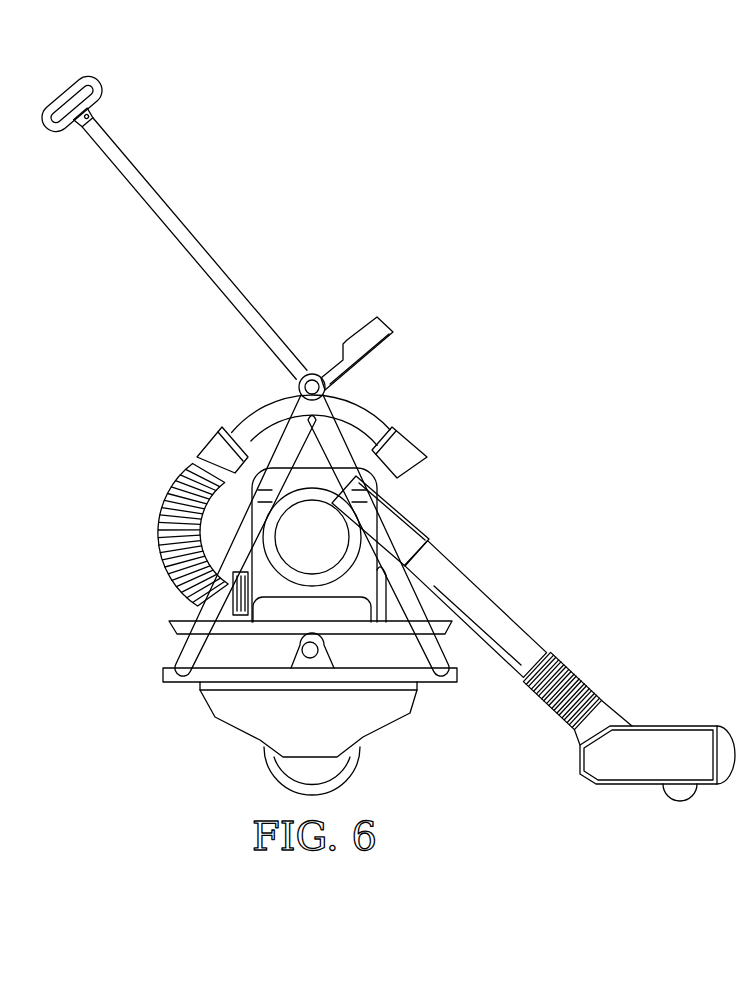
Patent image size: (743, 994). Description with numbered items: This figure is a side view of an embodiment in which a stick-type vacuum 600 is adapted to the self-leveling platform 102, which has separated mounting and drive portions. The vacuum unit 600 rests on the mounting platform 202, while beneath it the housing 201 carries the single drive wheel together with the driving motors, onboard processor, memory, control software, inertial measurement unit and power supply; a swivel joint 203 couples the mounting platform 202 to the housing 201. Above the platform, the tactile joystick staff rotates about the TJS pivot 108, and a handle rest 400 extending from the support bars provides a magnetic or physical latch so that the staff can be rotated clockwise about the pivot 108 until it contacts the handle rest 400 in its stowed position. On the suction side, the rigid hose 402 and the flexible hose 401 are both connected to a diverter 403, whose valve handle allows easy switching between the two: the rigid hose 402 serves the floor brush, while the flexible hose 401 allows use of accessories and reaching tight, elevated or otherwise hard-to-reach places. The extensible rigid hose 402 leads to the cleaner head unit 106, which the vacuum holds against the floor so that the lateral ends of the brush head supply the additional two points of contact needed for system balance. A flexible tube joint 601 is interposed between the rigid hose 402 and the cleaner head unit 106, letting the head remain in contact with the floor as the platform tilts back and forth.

The self-leveling platform 102 is at (178, 720).
The cleaner head unit 106 is at (667, 726).
The TJS pivot 108 is at (298, 387).
The housing 201 is at (236, 737).
The mounting platform 202 is at (169, 626).
The swivel joint 203 is at (310, 659).
The handle rest 400 is at (390, 330).
The flexible hose 401 is at (160, 550).
The rigid hose 402 is at (487, 596).
The diverter 403 is at (418, 528).
The stick-type vacuum 600 is at (190, 432).
The flexible tube joint 601 is at (576, 674).